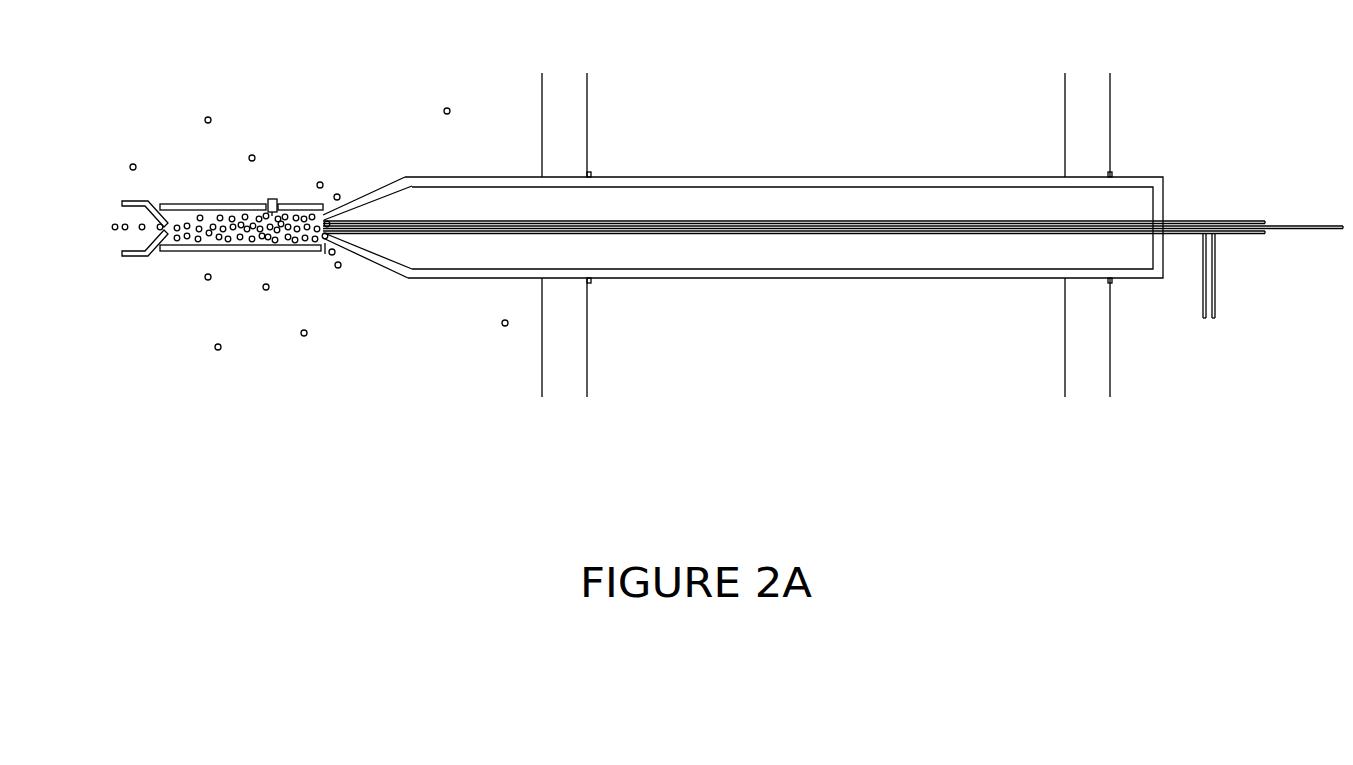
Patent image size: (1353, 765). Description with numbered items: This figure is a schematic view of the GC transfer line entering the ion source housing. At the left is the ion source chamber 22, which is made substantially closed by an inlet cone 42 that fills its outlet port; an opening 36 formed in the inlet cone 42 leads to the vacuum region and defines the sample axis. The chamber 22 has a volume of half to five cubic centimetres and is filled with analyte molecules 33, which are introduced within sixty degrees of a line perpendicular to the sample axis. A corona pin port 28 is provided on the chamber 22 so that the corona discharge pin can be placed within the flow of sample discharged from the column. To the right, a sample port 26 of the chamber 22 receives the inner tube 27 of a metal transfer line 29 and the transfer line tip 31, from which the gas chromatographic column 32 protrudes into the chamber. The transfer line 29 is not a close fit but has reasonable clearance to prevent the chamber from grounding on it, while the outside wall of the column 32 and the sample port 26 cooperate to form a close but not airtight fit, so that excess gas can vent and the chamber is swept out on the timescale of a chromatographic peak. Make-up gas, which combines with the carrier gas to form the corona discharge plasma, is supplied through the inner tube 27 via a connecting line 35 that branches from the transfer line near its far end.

The ion source chamber 22 is at (226, 203).
The sample port 26 is at (328, 216).
The inner tube 27 is at (630, 235).
The corona pin port 28 is at (280, 208).
The transfer line 29 is at (855, 273).
The transfer line tip 31 is at (324, 254).
The gas chromatographic column 32 is at (390, 228).
The analyte molecules 33 is at (235, 227).
The connecting line 35 is at (1208, 320).
The opening 36 is at (165, 228).
The inlet cone 42 is at (135, 256).